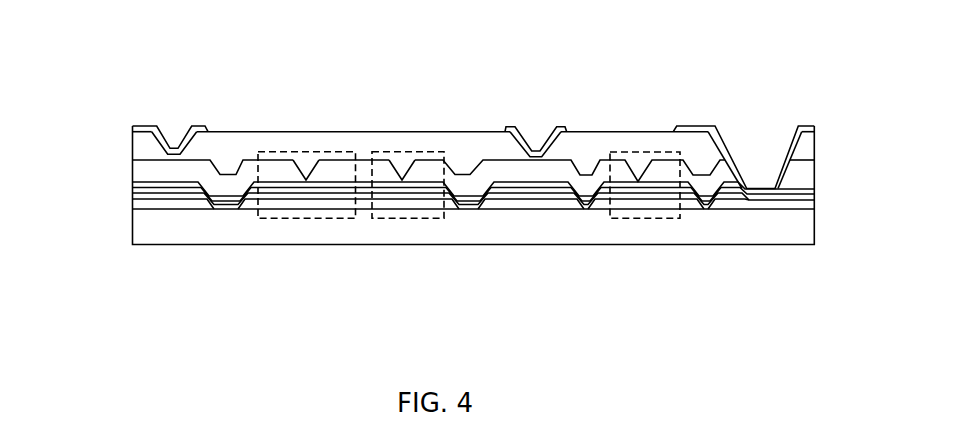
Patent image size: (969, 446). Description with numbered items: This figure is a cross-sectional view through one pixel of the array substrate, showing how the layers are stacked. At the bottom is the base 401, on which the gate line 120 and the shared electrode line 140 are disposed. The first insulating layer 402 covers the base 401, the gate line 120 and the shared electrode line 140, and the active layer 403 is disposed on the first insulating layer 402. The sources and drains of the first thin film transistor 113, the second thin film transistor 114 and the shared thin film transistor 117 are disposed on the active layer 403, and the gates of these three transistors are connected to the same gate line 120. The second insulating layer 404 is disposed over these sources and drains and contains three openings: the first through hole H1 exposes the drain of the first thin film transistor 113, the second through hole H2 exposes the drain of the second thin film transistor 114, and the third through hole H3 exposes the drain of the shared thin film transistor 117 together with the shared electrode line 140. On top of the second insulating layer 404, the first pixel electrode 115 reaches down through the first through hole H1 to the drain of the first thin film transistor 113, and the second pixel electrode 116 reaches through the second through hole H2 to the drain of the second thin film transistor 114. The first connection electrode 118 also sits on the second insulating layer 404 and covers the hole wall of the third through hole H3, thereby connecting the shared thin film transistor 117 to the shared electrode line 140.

The base 401 is at (815, 235).
The shared electrode line 140 is at (186, 203).
The first insulating layer 402 is at (137, 195).
The active layer 403 is at (137, 184).
The second insulating layer 404 is at (140, 143).
The first thin film transistor 113 is at (415, 219).
The second thin film transistor 114 is at (293, 219).
The first pixel electrode 115 is at (509, 126).
The second pixel electrode 116 is at (135, 127).
The shared thin film transistor 117 is at (643, 151).
The first connection electrode 118 is at (815, 126).
The gate line 120 is at (358, 203).
The first through hole H1 is at (538, 137).
The second through hole H2 is at (178, 140).
The third through hole H3 is at (767, 167).